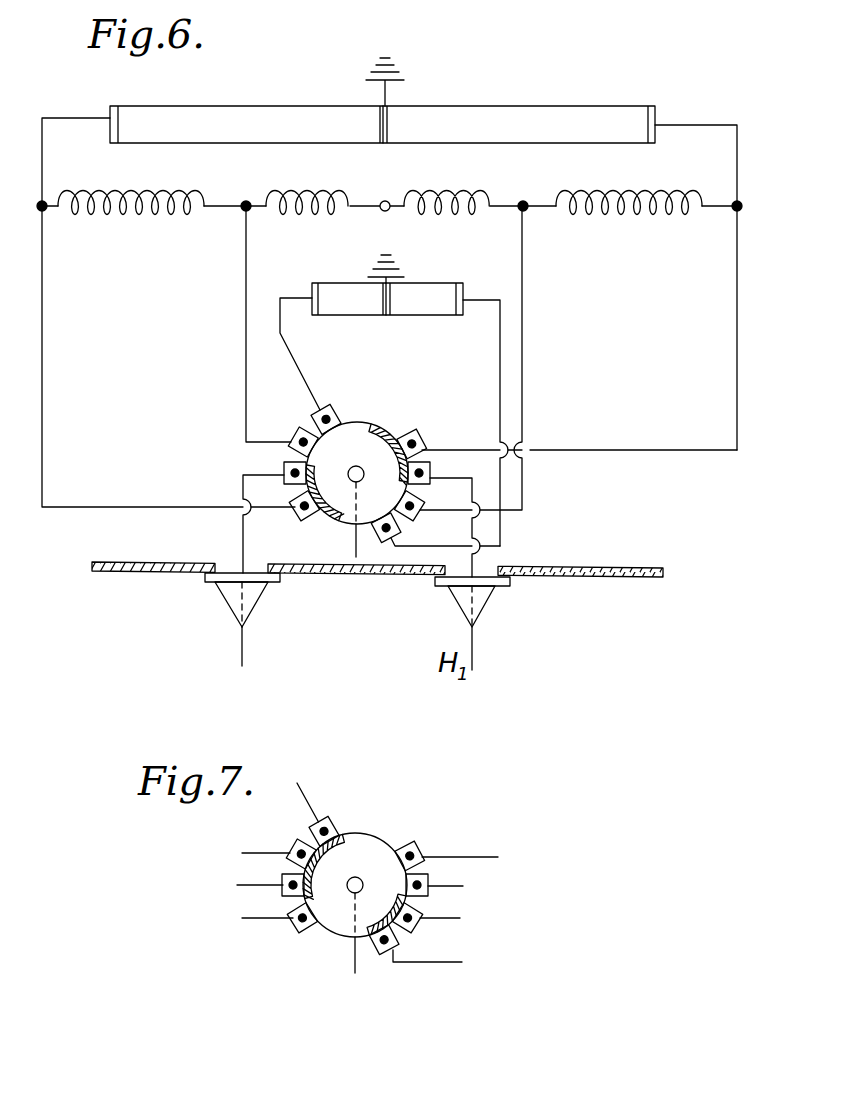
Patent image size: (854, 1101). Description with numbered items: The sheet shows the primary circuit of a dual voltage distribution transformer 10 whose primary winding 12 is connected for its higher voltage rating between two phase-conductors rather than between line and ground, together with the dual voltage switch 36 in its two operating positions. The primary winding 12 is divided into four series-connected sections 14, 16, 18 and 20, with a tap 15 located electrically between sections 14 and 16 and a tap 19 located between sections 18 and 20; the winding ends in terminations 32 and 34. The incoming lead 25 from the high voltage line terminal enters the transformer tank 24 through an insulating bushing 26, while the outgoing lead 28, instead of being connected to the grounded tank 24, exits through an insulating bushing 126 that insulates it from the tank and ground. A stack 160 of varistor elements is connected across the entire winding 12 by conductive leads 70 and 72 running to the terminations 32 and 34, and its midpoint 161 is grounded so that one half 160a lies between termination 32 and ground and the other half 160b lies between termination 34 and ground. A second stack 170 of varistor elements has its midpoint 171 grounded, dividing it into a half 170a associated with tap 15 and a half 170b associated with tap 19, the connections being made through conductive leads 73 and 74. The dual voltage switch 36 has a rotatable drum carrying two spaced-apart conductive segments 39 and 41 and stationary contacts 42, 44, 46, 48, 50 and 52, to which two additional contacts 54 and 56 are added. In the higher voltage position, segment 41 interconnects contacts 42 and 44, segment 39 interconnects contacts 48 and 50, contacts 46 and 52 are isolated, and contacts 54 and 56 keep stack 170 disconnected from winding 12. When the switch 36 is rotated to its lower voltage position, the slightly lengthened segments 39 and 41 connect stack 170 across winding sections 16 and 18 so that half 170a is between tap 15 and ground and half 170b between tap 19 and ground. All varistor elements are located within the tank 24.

In FIG. 6, the dual voltage distribution transformer 10 is at (150, 488).
In FIG. 6, the primary winding 12 is at (86, 226).
In FIG. 6, the winding section 14 is at (155, 216).
In FIG. 6, the tap 15 is at (244, 212).
In FIG. 6, the winding section 16 is at (333, 216).
In FIG. 6, the winding section 18 is at (481, 216).
In FIG. 6, the tap 19 is at (526, 212).
In FIG. 6, the winding section 20 is at (652, 216).
In FIG. 6, the transformer tank 24 is at (375, 574).
In FIG. 6, the incoming lead 25 is at (475, 568).
In FIG. 6, the insulating bushing 26 is at (485, 605).
In FIG. 6, the outgoing lead 28 is at (242, 542).
In FIG. 6, the termination 32 is at (40, 212).
In FIG. 6, the termination 34 is at (742, 212).
In FIG. 6, the dual voltage switch 36 is at (408, 408).
In FIG. 7, the dual voltage switch 36 is at (381, 832).
In FIG. 6, the conductive segment 39 is at (349, 474).
In FIG. 7, the conductive segment 39 is at (352, 878).
In FIG. 6, the conductive segment 41 is at (365, 468).
In FIG. 7, the conductive segment 41 is at (388, 885).
In FIG. 6, the switch contact 42 is at (421, 440).
In FIG. 7, the switch contact 42 is at (415, 848).
In FIG. 6, the switch contact 44 is at (442, 468).
In FIG. 7, the switch contact 44 is at (432, 888).
In FIG. 6, the switch contact 46 is at (435, 498).
In FIG. 7, the switch contact 46 is at (424, 918).
In FIG. 6, the switch contact 48 is at (302, 520).
In FIG. 7, the switch contact 48 is at (306, 932).
In FIG. 6, the switch contact 50 is at (384, 213).
In FIG. 7, the switch contact 50 is at (283, 879).
In FIG. 6, the switch contact 52 is at (294, 436).
In FIG. 7, the switch contact 52 is at (293, 845).
In FIG. 6, the additional switch contact 54 is at (400, 528).
In FIG. 7, the additional switch contact 54 is at (386, 956).
In FIG. 6, the additional switch contact 56 is at (344, 412).
In FIG. 7, the additional switch contact 56 is at (336, 824).
In FIG. 6, the conductive lead 70 is at (42, 152).
In FIG. 6, the conductive lead 72 is at (738, 166).
In FIG. 6, the conductive lead 73 is at (279, 340).
In FIG. 6, the conductive lead 74 is at (499, 375).
In FIG. 6, the insulating bushing 126 is at (225, 600).
In FIG. 6, the varistor stack 160 is at (382, 80).
In FIG. 6, the half of varistor stack 160a is at (222, 116).
In FIG. 6, the half of varistor stack 160b is at (567, 117).
In FIG. 6, the midpoint ground connection 161 is at (398, 96).
In FIG. 6, the second varistor stack 170 is at (368, 304).
In FIG. 6, the half of second varistor stack 170a is at (365, 317).
In FIG. 6, the half of second varistor stack 170b is at (393, 317).
In FIG. 6, the midpoint ground connection 171 is at (400, 268).